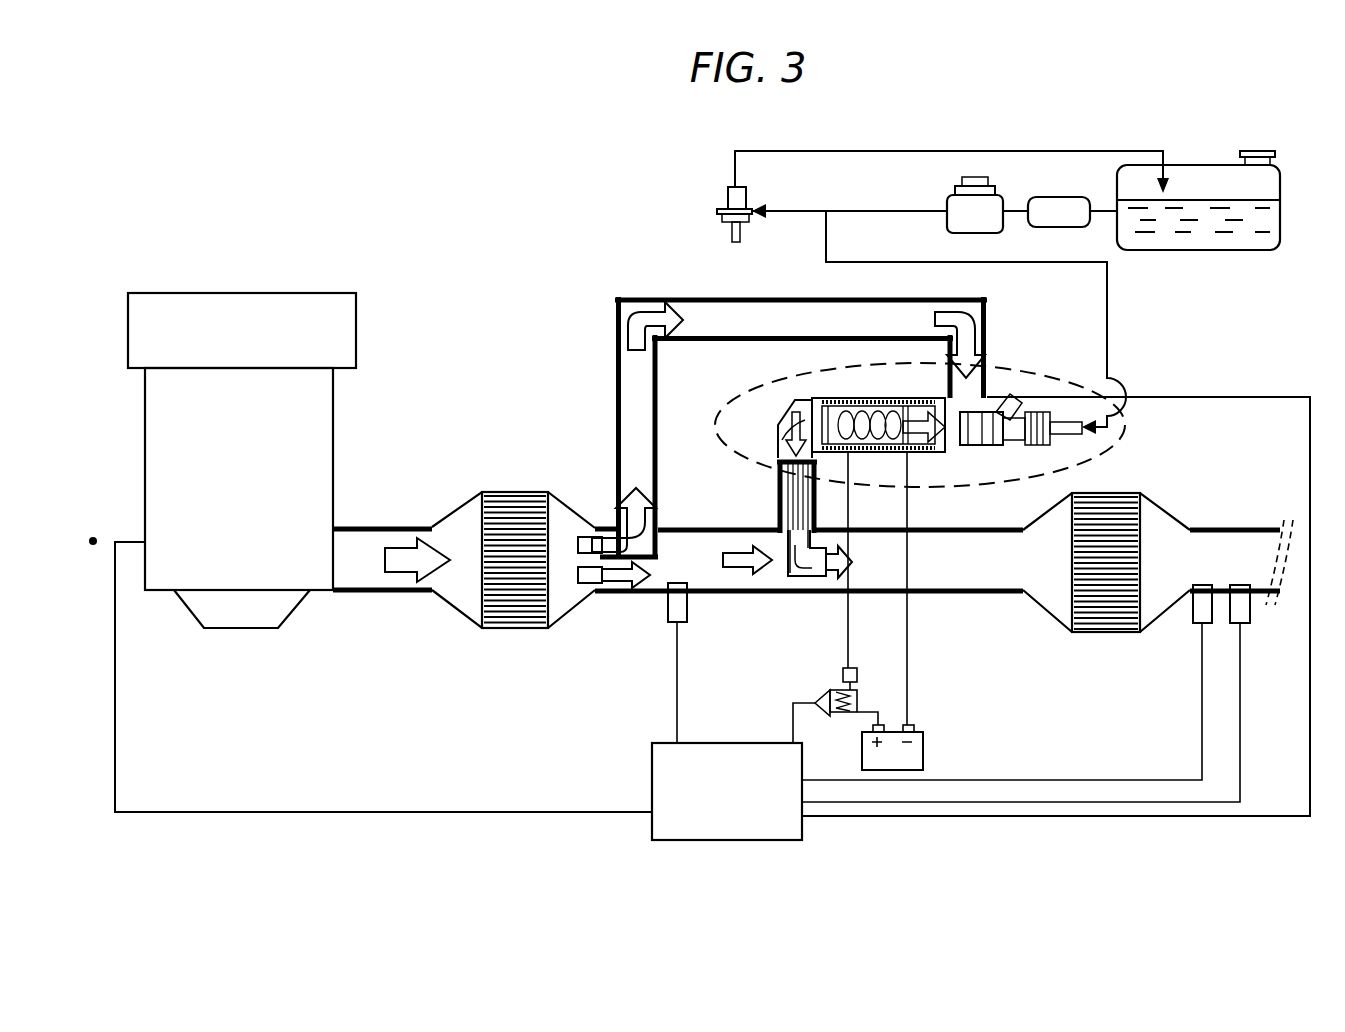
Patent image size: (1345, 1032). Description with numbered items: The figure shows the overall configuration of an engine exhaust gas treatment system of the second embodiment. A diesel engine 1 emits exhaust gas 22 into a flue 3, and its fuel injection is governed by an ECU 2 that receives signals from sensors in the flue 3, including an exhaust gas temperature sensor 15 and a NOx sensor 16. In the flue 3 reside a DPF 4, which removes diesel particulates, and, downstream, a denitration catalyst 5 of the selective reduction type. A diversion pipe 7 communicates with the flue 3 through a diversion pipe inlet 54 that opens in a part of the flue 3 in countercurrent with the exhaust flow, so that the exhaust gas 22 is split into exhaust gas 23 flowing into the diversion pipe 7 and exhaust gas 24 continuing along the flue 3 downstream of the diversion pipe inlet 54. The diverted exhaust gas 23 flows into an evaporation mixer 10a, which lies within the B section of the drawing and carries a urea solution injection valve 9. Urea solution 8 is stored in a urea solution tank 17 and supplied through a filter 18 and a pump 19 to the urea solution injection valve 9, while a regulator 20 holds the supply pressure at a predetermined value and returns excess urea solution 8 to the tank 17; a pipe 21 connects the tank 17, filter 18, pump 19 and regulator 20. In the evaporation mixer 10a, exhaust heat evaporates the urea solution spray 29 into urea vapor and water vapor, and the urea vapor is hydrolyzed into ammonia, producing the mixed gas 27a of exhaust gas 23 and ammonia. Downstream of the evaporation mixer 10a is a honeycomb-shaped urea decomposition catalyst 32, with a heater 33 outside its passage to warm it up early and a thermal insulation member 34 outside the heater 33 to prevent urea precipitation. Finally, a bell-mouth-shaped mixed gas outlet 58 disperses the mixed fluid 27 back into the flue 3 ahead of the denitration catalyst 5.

The diesel engine 1 is at (243, 323).
The ECU 2 is at (685, 820).
The flue 3 is at (356, 575).
The DPF 4 is at (510, 606).
The denitration catalyst 5 is at (1110, 606).
The diversion pipe 7 is at (612, 368).
The urea solution 8 is at (1262, 230).
The urea solution injection valve 9 is at (1018, 447).
The evaporation mixer 10a is at (790, 395).
The exhaust gas temperature sensor 15 is at (672, 605).
The NOx sensor 16 is at (1200, 608).
The urea solution tank 17 is at (1242, 608).
The filter 18 is at (1062, 200).
The pump 19 is at (990, 205).
The regulator 20 is at (733, 195).
The pipe 21 is at (826, 151).
The exhaust gas 22 is at (411, 566).
The exhaust gas 23 is at (613, 545).
The exhaust gas 24 is at (588, 576).
The mixed fluid 27 is at (795, 567).
The mixed gas 27a is at (778, 438).
The urea solution spray 29 is at (948, 455).
The urea decomposition catalyst 32 is at (790, 510).
The heater 33 is at (776, 490).
The thermal insulation member 34 is at (776, 470).
The diversion pipe inlet 54 is at (590, 530).
The mixed gas outlet 58 is at (835, 572).
The B section B is at (1068, 382).